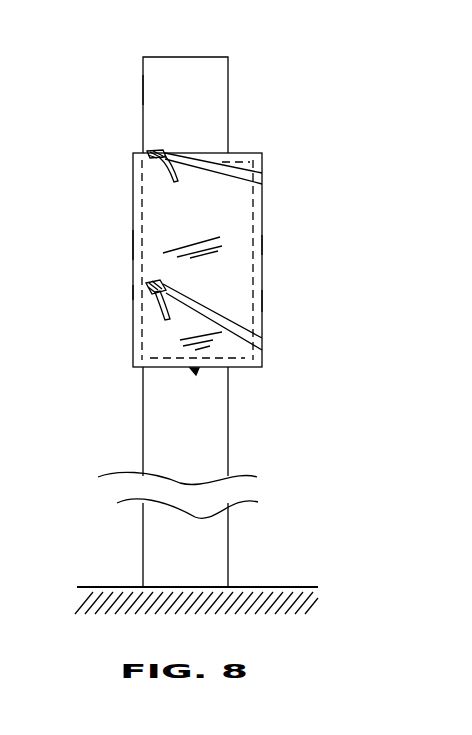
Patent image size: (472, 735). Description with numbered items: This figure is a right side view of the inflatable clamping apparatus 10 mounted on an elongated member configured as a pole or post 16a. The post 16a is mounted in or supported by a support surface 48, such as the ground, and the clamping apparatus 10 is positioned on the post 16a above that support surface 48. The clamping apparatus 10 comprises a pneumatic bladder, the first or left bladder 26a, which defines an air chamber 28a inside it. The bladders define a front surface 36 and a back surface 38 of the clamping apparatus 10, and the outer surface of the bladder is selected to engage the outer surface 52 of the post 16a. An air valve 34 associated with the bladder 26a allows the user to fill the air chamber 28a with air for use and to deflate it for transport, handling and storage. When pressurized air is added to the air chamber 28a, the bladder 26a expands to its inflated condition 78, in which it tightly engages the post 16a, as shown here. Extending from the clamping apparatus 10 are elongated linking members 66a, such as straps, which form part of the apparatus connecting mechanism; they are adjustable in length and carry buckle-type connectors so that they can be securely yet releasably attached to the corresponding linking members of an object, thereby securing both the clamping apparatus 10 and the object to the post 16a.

The inflatable clamping apparatus 10 is at (223, 264).
The pole or post 16a is at (207, 90).
The first/left bladder 26a is at (265, 249).
The air chamber 28a is at (162, 198).
The air valve 34 is at (202, 372).
The front surface 36 is at (273, 301).
The back surface 38 is at (119, 244).
The support surface 48 is at (268, 578).
The outer surface of the elongated member 52 is at (131, 89).
The linking members 66a is at (235, 180).
The inflated condition 78 is at (101, 299).